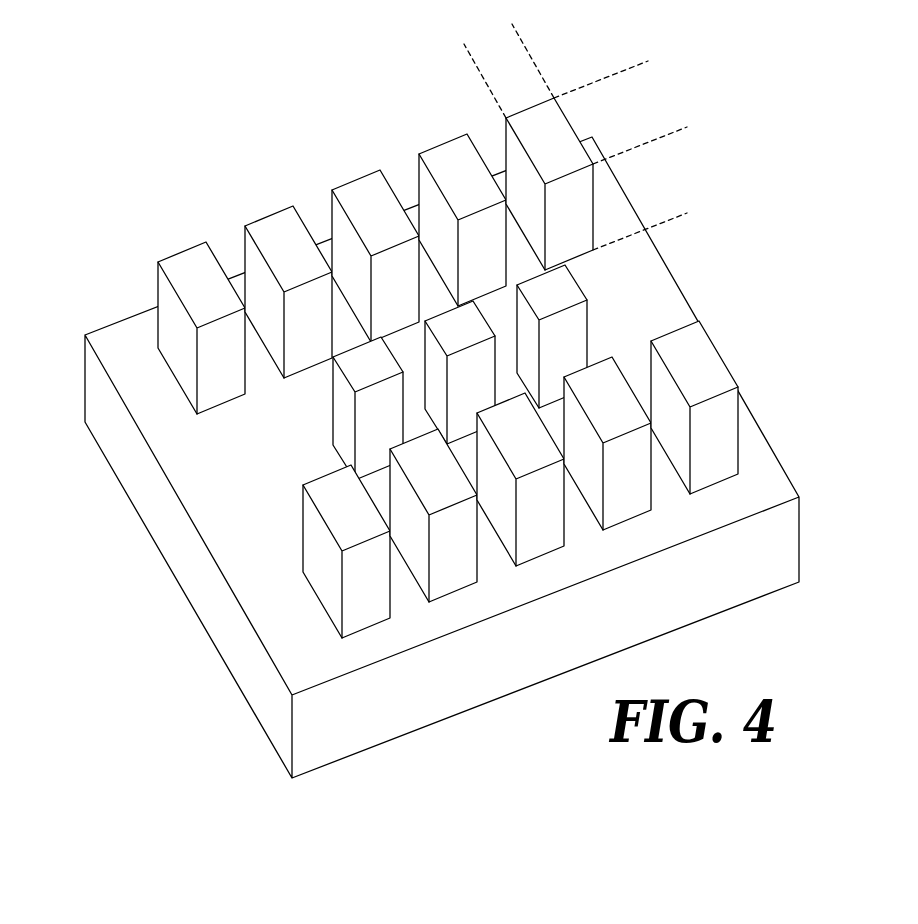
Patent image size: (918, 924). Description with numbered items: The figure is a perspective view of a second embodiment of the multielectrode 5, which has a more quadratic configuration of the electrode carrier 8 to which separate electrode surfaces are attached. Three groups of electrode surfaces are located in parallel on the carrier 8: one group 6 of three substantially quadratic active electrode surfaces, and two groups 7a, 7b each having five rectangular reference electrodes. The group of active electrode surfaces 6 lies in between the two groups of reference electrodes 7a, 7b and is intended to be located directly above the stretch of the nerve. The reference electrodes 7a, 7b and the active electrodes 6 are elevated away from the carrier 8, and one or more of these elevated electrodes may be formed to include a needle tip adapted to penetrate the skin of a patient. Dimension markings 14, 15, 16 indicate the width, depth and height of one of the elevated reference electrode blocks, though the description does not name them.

The multielectrode 5 is at (437, 433).
The group of active electrode surfaces 6 is at (356, 399).
The group of reference electrodes 7a is at (153, 244).
The group of reference electrodes 7b is at (345, 552).
The electrode carrier 8 is at (174, 550).
The block width 14 is at (512, 24).
The block depth 15 is at (648, 61).
The block height 16 is at (687, 127).